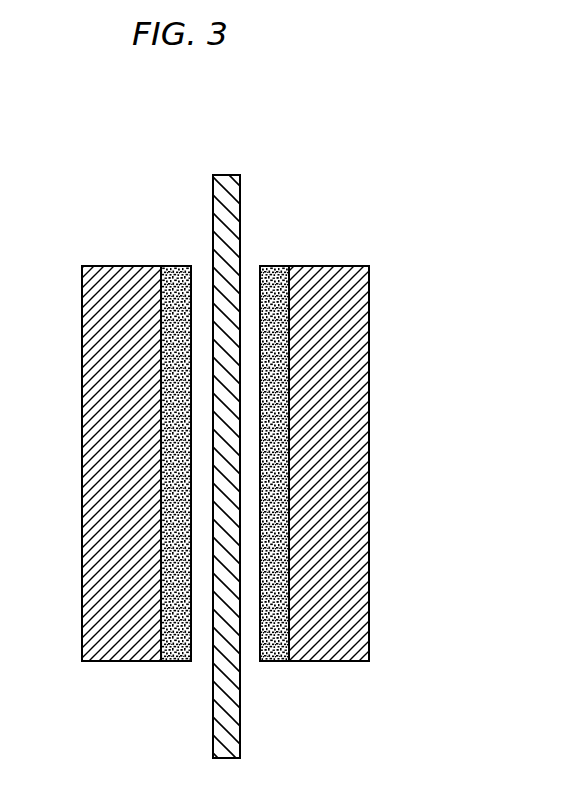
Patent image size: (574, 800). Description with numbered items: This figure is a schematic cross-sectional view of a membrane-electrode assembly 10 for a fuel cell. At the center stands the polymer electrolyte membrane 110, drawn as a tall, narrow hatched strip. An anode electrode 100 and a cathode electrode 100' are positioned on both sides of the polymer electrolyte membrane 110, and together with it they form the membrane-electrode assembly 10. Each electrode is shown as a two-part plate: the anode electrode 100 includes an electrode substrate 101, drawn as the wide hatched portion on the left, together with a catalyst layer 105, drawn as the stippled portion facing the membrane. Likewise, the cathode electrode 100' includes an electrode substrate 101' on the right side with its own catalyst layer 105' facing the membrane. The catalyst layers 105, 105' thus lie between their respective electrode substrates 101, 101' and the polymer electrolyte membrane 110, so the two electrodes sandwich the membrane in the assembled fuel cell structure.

The membrane-electrode assembly 10 is at (229, 413).
The anode electrode 100 is at (101, 457).
The cathode electrode 100' is at (354, 460).
The electrode substrate 101 is at (86, 463).
The electrode substrate 101' is at (368, 463).
The catalyst layer 105 is at (159, 494).
The catalyst layer 105' is at (297, 494).
The polymer electrolyte membrane 110 is at (227, 175).